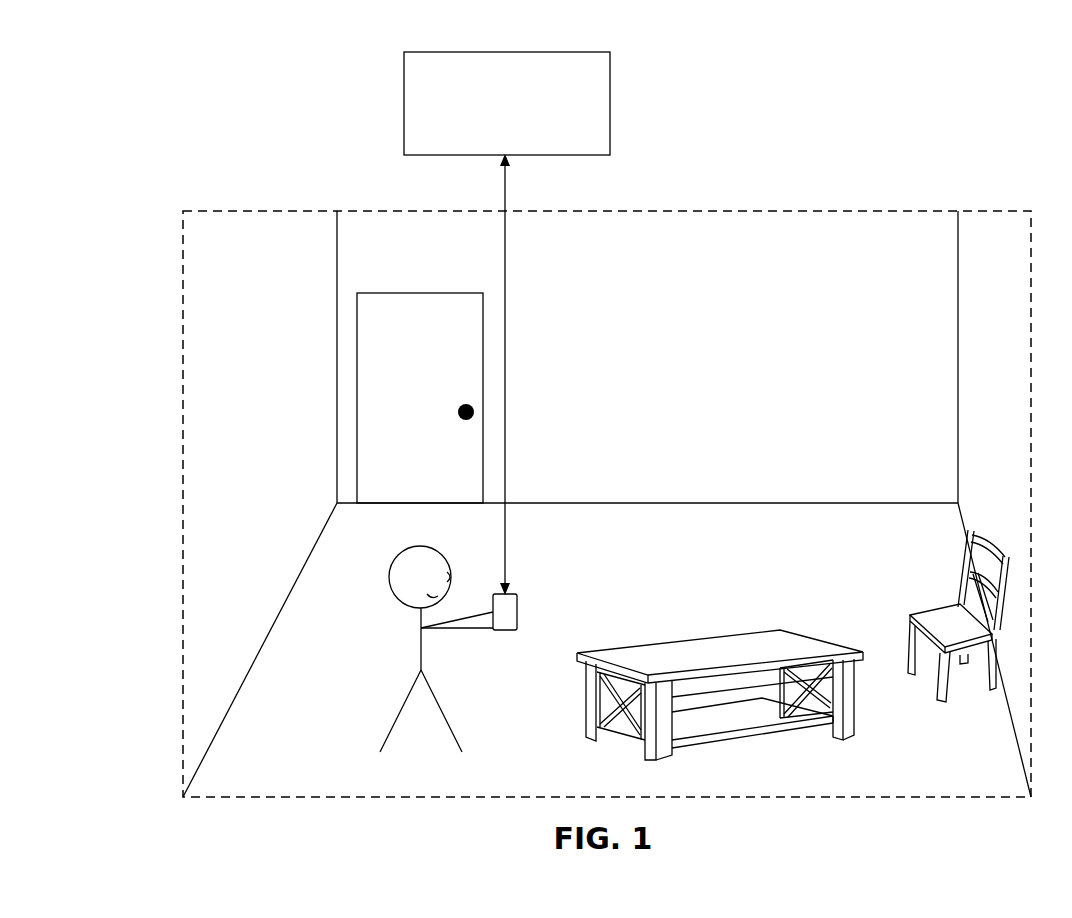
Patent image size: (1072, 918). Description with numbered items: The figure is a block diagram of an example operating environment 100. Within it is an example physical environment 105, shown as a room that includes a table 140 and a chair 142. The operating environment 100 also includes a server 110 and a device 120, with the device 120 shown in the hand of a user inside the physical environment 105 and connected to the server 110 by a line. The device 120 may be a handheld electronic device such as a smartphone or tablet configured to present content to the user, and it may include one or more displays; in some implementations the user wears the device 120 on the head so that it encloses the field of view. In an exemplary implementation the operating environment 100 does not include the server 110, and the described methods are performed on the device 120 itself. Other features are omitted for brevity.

The operating environment 100 is at (224, 66).
The physical environment 105 is at (607, 504).
The server 110 is at (507, 103).
The device 120 is at (518, 610).
The table 140 is at (785, 645).
The chair 142 is at (982, 540).